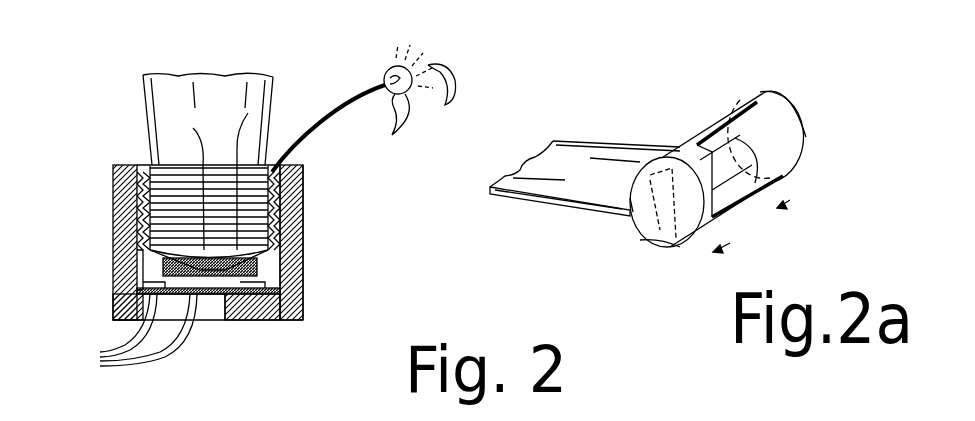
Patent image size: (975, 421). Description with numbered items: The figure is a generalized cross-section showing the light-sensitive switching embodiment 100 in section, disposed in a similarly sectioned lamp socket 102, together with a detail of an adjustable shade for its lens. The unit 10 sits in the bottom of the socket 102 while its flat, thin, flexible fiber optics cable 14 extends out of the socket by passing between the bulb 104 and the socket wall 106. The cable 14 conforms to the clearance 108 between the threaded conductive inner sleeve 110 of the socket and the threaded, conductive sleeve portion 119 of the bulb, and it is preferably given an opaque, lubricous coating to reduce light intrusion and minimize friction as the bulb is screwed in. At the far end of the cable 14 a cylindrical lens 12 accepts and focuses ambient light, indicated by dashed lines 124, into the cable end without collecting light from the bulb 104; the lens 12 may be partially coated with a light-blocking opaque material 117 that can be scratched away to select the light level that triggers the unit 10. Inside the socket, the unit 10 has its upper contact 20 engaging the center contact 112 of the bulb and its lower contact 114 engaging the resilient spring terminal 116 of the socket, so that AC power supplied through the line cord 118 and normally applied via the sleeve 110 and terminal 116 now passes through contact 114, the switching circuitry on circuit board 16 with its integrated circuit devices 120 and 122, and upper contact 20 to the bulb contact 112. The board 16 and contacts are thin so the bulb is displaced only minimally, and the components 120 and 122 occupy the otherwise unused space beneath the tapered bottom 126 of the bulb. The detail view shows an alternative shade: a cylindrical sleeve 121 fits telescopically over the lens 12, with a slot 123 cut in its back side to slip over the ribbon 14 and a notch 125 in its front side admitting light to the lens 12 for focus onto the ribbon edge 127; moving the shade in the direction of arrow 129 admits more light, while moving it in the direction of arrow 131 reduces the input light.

In FIG. 2, the switching unit 10 is at (125, 262).
In FIG. 2, the cylindrical lens 12 is at (393, 118).
In FIG. 2A, the cylindrical lens 12 is at (650, 237).
In FIG. 2, the fiber optics cable 14 is at (310, 137).
In FIG. 2A, the fiber optics cable 14 is at (540, 204).
In FIG. 2, the circuit board 16 is at (303, 305).
In FIG. 2, the upper contact 20 is at (184, 182).
In FIG. 2, the embodiment of the invention 100 is at (137, 286).
In FIG. 2, the lamp socket 102 is at (113, 190).
In FIG. 2, the bulb 104 is at (153, 120).
In FIG. 2, the socket wall 106 is at (303, 195).
In FIG. 2, the clearance 108 is at (303, 215).
In FIG. 2, the threaded conductive inner sleeve 110 is at (303, 240).
In FIG. 2, the center contact 112 is at (233, 173).
In FIG. 2, the lower contact 114 is at (243, 316).
In FIG. 2, the resilient spring terminal 116 is at (210, 296).
In FIG. 2, the light-blocking opaque material 117 is at (383, 76).
In FIG. 2, the line cord 118 is at (163, 340).
In FIG. 2, the threaded conductive sleeve portion 119 is at (155, 170).
In FIG. 2, the integrated circuit device 120 is at (113, 310).
In FIG. 2A, the cylindrical sleeve 121 is at (787, 100).
In FIG. 2, the integrated circuit device 122 is at (303, 270).
In FIG. 2A, the slot 123 is at (682, 250).
In FIG. 2, the ambient light 124 is at (433, 97).
In FIG. 2A, the notch 125 is at (747, 205).
In FIG. 2, the tapered bottom 126 is at (137, 245).
In FIG. 2A, the ribbon edge 127 is at (632, 210).
In FIG. 2A, the arrow 129 is at (790, 202).
In FIG. 2A, the arrow 131 is at (730, 246).